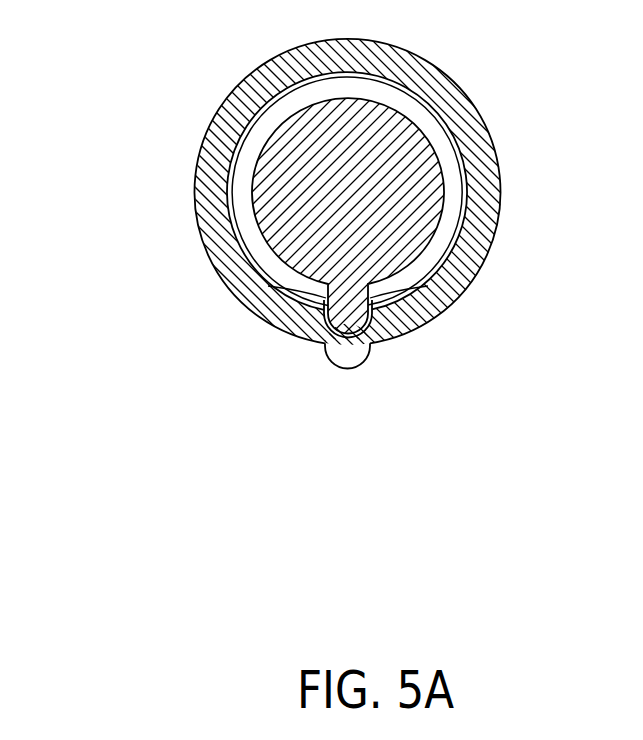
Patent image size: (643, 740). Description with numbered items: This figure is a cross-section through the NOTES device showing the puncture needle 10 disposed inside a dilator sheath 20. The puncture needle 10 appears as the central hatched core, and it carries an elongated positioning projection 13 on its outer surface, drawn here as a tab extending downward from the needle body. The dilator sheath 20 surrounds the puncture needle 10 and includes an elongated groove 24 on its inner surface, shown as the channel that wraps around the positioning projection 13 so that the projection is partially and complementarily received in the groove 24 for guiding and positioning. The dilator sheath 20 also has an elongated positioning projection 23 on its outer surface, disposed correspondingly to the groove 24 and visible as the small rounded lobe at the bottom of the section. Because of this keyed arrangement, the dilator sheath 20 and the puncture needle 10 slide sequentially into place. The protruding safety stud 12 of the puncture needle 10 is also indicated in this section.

The puncture needle 10 is at (383, 133).
The protruding safety stud 12 is at (445, 155).
The elongated positioning projection 13 is at (275, 290).
The dilator sheath 20 is at (203, 172).
The elongated positioning projection 23 is at (348, 362).
The elongated groove 24 is at (372, 296).